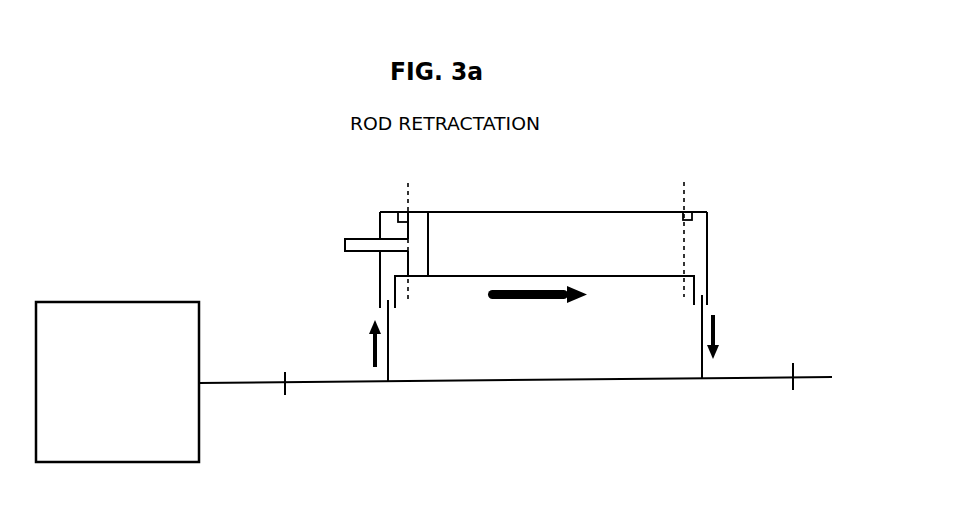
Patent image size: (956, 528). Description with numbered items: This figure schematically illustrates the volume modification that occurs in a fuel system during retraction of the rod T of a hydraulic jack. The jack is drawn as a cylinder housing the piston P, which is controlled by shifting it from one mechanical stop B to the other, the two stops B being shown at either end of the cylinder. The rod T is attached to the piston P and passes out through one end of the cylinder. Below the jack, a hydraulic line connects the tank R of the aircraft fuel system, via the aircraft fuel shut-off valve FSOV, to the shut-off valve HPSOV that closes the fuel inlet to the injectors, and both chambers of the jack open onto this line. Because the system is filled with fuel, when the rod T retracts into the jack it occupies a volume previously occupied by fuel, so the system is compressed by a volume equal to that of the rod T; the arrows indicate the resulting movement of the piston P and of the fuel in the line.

The tank R is at (118, 302).
The mechanical stop B is at (398, 217).
The piston P is at (420, 244).
The rod T is at (361, 246).
The aircraft fuel shut-off valve FSOV is at (284, 397).
The shut-off valve HPSOV is at (792, 389).